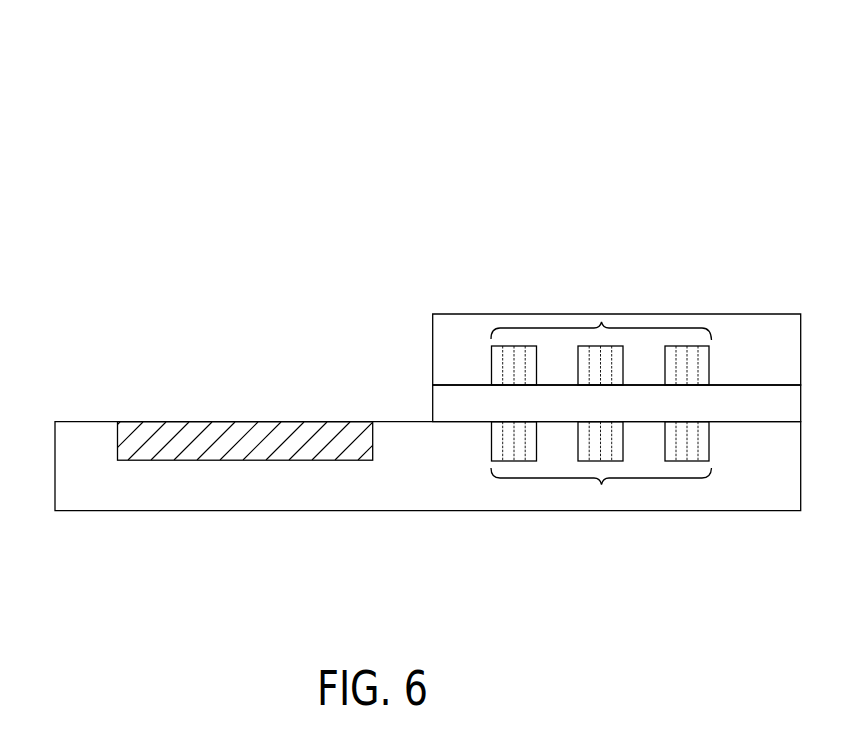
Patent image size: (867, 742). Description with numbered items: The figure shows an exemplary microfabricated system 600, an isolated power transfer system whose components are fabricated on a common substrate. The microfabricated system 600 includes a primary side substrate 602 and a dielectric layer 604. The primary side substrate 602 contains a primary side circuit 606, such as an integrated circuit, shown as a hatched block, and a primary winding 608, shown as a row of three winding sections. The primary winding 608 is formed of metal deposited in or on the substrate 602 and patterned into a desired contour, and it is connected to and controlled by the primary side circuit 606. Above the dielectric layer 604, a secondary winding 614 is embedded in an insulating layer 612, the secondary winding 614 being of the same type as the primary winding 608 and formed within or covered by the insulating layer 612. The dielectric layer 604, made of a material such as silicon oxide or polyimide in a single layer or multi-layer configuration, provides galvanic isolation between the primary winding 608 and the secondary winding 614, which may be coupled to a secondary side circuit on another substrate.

The microfabricated system 600 is at (412, 302).
The primary side substrate 602 is at (162, 497).
The dielectric layer 604 is at (421, 403).
The primary side circuit 606 is at (360, 440).
The primary winding 608 is at (602, 485).
The insulating layer 612 is at (462, 349).
The secondary winding 614 is at (602, 321).